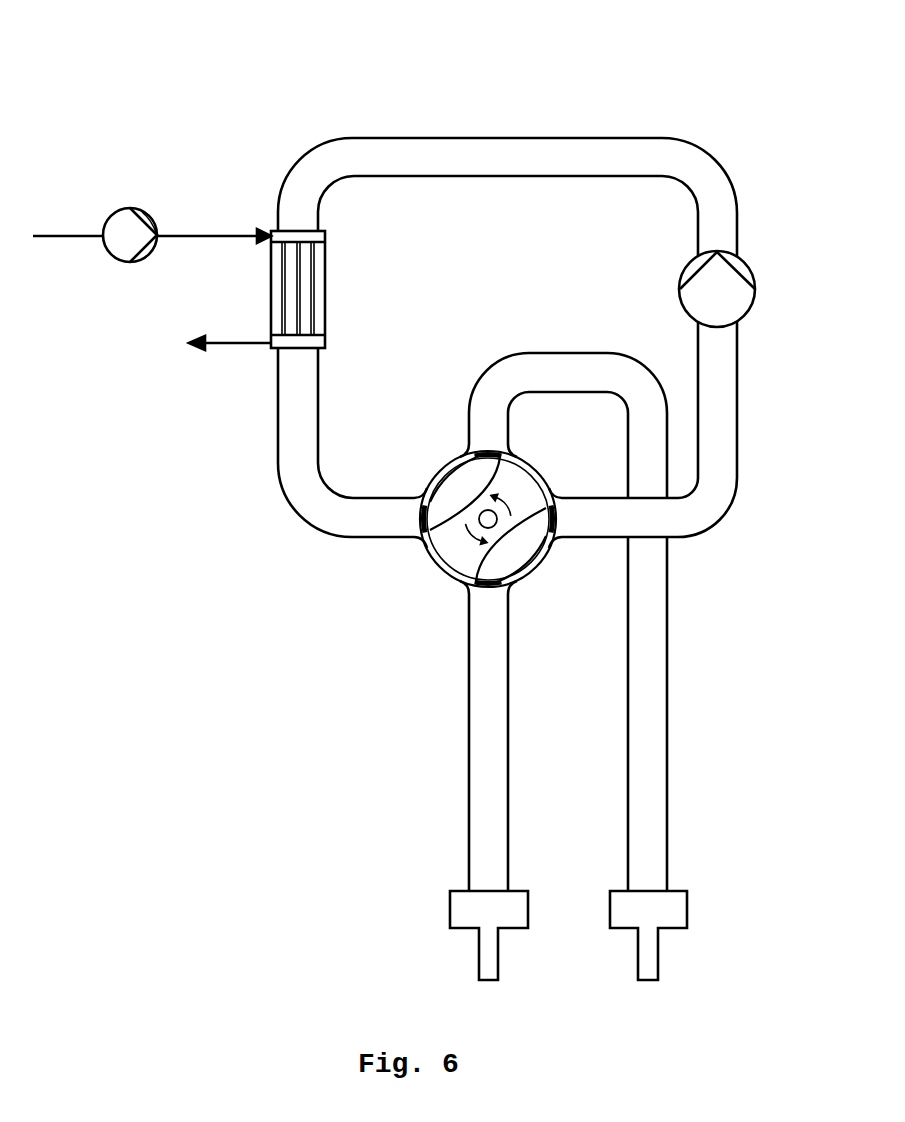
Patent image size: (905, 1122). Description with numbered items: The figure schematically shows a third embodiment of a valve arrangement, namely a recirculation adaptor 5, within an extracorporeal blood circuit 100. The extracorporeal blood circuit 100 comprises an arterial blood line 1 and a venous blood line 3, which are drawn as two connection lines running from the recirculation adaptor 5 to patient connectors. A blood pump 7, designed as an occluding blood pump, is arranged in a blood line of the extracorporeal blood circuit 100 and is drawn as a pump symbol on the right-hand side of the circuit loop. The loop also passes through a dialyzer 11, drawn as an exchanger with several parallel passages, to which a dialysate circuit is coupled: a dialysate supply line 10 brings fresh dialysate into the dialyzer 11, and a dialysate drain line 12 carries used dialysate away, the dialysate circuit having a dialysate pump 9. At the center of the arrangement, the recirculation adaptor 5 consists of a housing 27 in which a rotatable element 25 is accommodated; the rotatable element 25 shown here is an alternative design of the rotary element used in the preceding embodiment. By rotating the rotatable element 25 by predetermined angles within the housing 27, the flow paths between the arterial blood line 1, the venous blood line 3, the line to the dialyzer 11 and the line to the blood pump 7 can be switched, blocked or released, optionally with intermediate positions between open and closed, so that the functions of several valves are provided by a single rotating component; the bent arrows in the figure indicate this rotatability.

The extracorporeal blood circuit 100 is at (749, 126).
The arterial blood line 1 is at (487, 845).
The venous blood line 3 is at (650, 843).
The recirculation adaptor 5 is at (438, 519).
The blood pump 7 is at (740, 300).
The dialysate pump 9 is at (122, 238).
The dialysate supply line 10 is at (213, 236).
The dialyzer 11 is at (276, 287).
The dialysate drain line 12 is at (253, 343).
The rotatable element 25 is at (465, 560).
The housing 27 is at (437, 468).